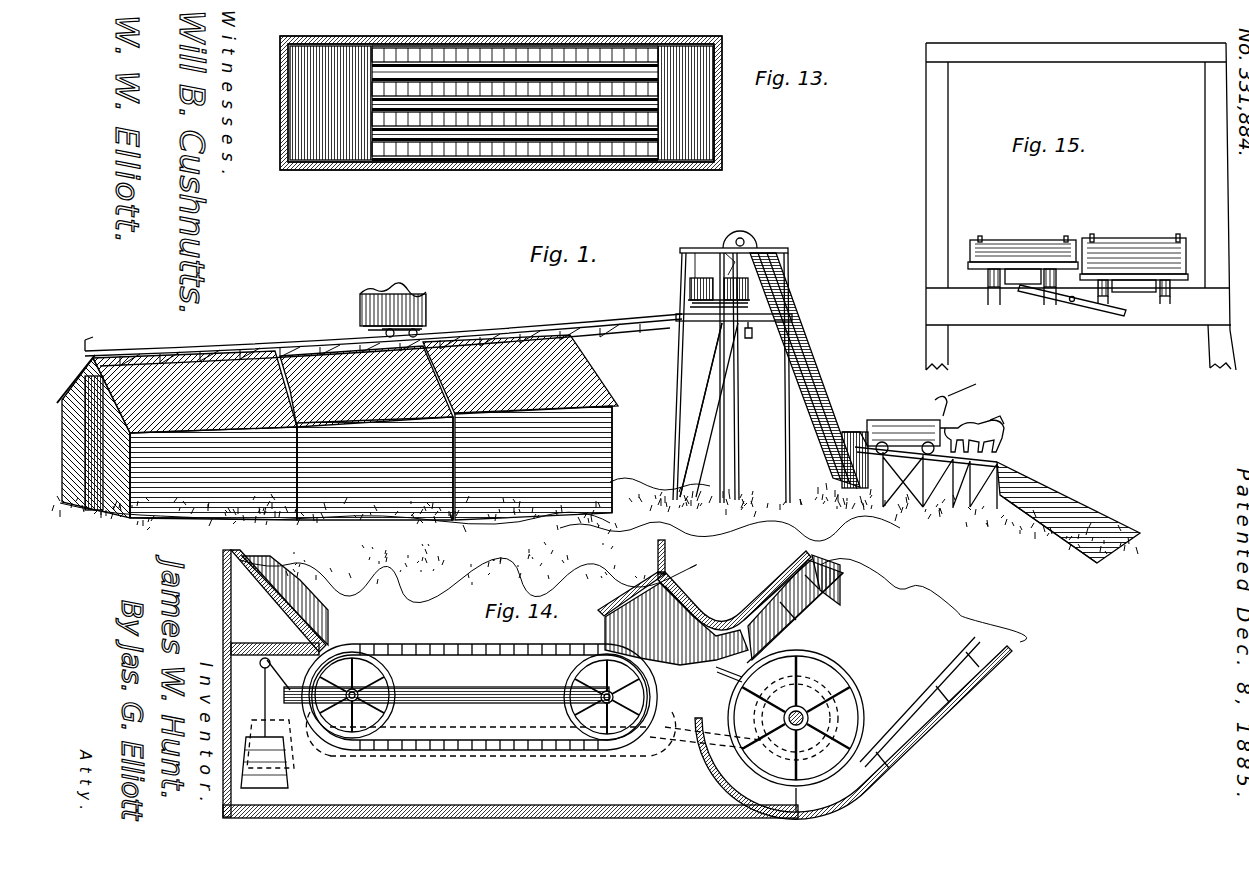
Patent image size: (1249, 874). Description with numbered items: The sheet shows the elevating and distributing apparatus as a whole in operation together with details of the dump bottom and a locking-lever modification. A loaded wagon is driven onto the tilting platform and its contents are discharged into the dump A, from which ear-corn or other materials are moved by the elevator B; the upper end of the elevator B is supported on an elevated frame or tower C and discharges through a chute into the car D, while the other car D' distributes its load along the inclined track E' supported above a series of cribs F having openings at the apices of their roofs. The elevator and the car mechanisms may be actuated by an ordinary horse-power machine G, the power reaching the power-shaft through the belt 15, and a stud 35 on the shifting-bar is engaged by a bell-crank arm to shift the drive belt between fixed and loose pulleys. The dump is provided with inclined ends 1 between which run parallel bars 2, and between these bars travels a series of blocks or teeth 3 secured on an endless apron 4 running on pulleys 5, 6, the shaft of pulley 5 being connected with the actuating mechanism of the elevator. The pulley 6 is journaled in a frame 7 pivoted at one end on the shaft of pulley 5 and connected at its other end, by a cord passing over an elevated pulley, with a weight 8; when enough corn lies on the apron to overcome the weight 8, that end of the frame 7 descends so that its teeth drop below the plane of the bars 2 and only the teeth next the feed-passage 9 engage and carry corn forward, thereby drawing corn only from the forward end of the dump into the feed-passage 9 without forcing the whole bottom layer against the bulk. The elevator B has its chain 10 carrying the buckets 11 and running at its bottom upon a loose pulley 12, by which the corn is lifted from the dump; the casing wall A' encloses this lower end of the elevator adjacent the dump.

In FIG. 13, the inclined ends 1 is at (502, 103).
In FIG. 14, the inclined ends 1 is at (640, 602).
In FIG. 13, the parallel bars 2 is at (515, 113).
In FIG. 14, the parallel bars 2 is at (442, 645).
In FIG. 13, the blocks or teeth 3 is at (578, 175).
In FIG. 14, the blocks or teeth 3 is at (520, 744).
In FIG. 14, the endless apron 4 is at (479, 725).
In FIG. 14, the pulley 5 is at (607, 697).
In FIG. 14, the pulley 6 is at (352, 695).
In FIG. 14, the frame 7 is at (450, 688).
In FIG. 13, the weight 8 is at (590, 50).
In FIG. 14, the weight 8 is at (267, 723).
In FIG. 14, the feed-passage 9 is at (679, 618).
In FIG. 14, the chain 10 is at (778, 598).
In FIG. 14, the buckets 11 is at (861, 688).
In FIG. 14, the loose pulley 12 is at (856, 668).
In FIG. 1, the belt 15 is at (701, 410).
In FIG. 1, the stud 35 is at (426, 315).
In FIG. 1, the dump A is at (991, 473).
In FIG. 14, the casing wall A' is at (498, 684).
In FIG. 1, the elevator B is at (808, 356).
In FIG. 1, the elevated frame or tower C is at (738, 384).
In FIG. 1, the car D is at (700, 286).
In FIG. 1, the car D' is at (406, 304).
In FIG. 1, the track rail E' is at (383, 334).
In FIG. 1, the cribs F is at (88, 355).
In FIG. 1, the horse-power machine G is at (595, 521).